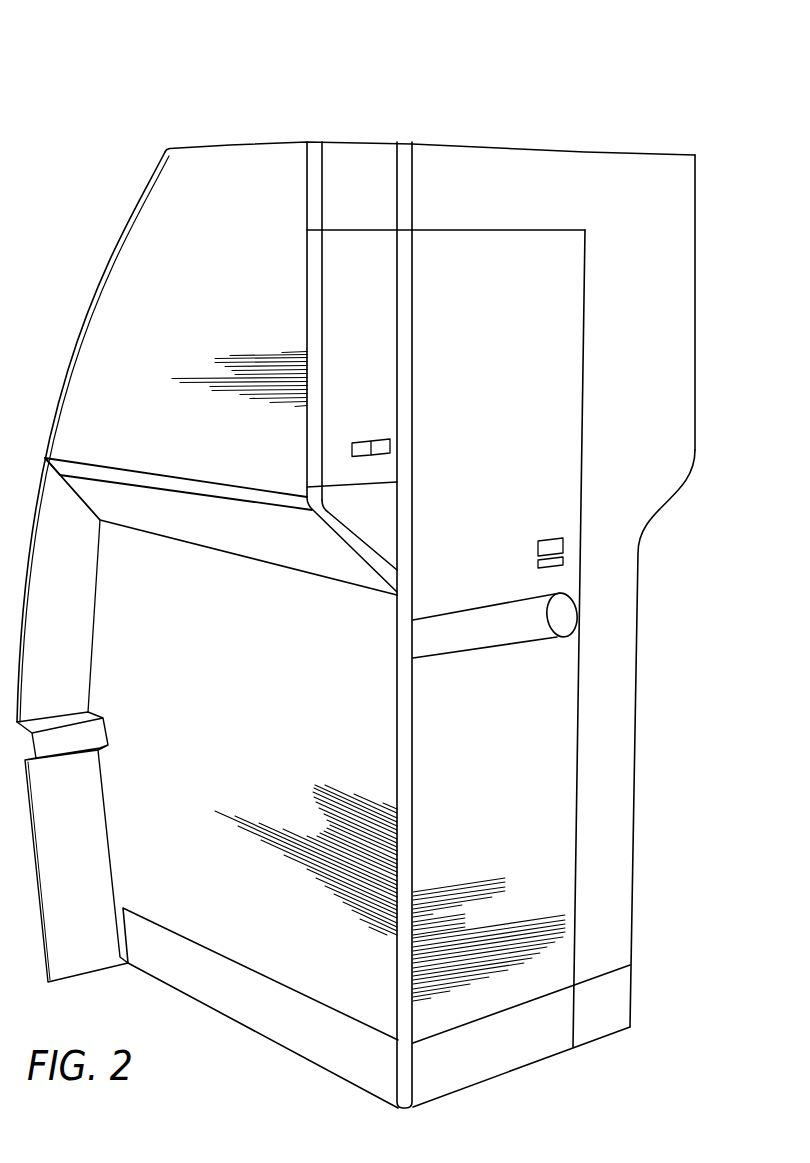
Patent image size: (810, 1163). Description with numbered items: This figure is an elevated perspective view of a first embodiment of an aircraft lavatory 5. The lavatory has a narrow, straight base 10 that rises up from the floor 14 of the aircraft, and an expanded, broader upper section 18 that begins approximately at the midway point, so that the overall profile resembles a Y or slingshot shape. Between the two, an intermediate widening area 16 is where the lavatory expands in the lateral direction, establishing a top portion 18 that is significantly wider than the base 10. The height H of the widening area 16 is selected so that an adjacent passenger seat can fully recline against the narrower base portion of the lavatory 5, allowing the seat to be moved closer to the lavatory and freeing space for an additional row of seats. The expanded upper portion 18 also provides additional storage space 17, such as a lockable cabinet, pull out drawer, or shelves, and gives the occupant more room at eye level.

The lavatory 5 is at (637, 100).
The base 10 is at (478, 1067).
The floor 14 is at (318, 1112).
The widening area 16 is at (375, 528).
The storage space 17 is at (380, 317).
The upper section 18 is at (662, 303).
The height H is at (723, 455).